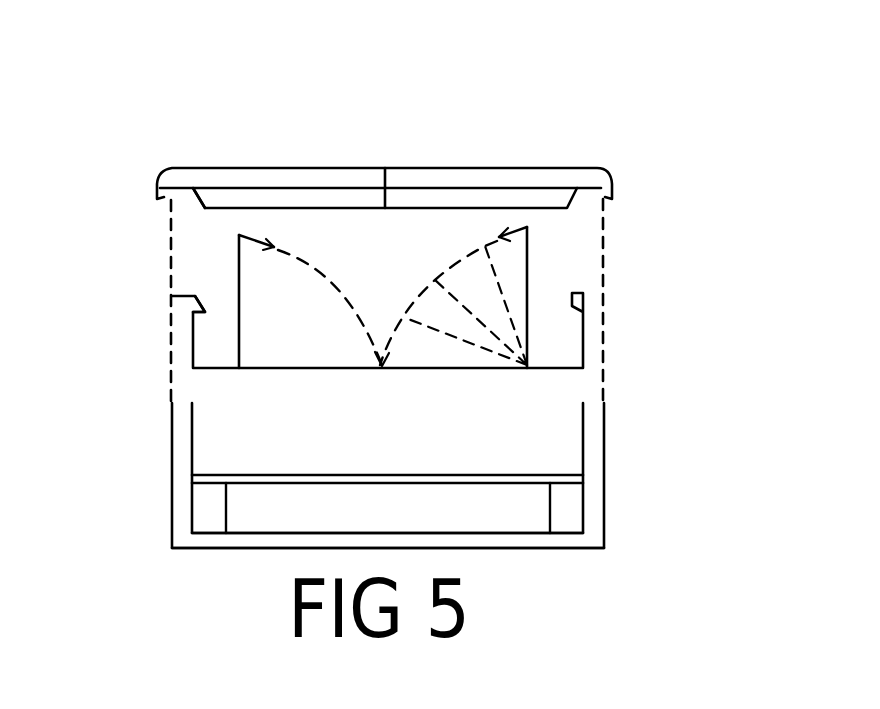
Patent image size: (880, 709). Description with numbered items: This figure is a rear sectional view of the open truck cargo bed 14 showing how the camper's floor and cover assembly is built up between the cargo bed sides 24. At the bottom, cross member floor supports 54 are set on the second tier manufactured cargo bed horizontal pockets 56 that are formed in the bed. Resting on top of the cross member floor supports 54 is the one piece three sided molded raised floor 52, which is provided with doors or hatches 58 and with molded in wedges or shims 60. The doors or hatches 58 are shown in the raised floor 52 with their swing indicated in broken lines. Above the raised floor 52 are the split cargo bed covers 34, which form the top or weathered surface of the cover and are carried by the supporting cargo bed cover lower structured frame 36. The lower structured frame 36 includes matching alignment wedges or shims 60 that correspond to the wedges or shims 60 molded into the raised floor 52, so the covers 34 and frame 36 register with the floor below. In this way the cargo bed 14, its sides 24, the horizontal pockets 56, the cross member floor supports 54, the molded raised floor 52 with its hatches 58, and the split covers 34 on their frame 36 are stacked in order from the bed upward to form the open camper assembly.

The open truck cargo bed 14 is at (470, 512).
The cargo bed sides 24 is at (610, 430).
The split cargo bed covers 34 is at (455, 160).
The lower structured frame 36 is at (528, 202).
The one piece three sided molded raised floor 52 is at (588, 332).
The cross member floor supports 54 is at (275, 472).
The second tier manufactured cargo bed horizontal pockets 56 is at (192, 481).
The doors or hatches 58 is at (535, 302).
The wedges or shims 60 is at (202, 294).